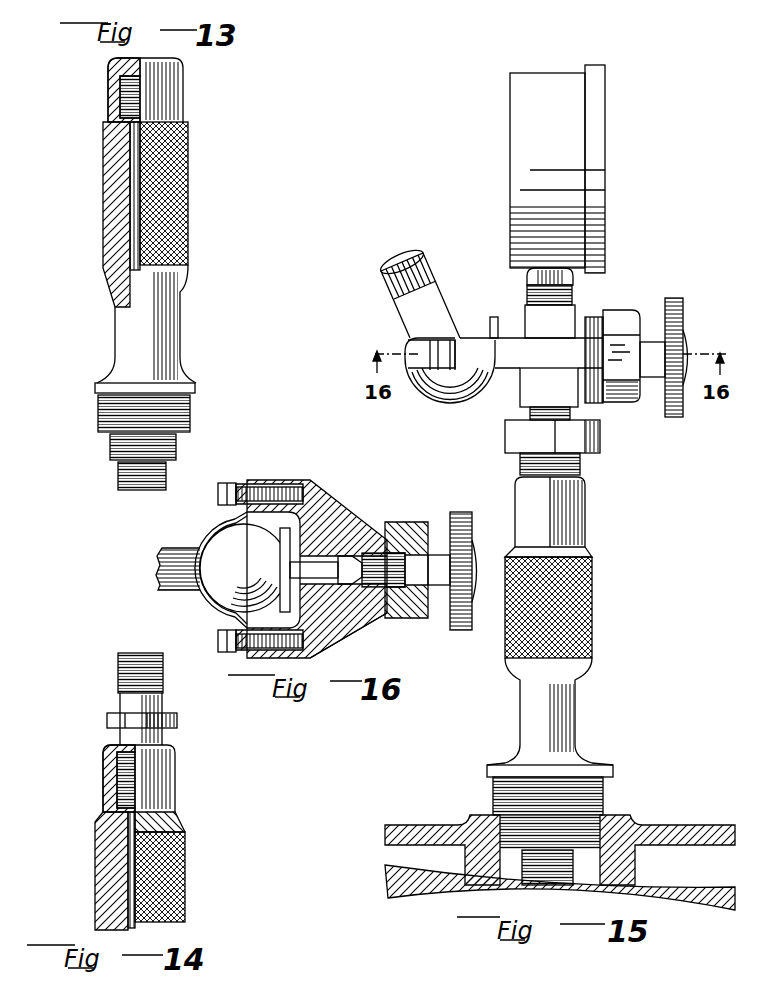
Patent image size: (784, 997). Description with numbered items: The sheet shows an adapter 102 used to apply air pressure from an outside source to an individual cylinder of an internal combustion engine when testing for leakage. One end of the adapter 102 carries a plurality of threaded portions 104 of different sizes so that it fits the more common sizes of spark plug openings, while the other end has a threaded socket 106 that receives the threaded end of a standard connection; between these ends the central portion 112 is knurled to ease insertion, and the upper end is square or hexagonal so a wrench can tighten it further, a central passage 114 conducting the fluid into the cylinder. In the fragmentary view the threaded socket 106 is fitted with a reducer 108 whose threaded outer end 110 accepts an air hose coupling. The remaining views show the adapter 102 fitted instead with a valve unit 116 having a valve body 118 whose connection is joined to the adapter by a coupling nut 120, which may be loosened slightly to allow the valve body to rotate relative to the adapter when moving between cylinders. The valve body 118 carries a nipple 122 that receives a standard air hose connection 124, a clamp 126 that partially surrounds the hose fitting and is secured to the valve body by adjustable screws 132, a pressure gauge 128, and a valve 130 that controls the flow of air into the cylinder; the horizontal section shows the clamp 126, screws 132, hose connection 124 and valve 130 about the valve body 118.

In FIG. 13, the adapter 102 is at (180, 325).
In FIG. 15, the adapter 102 is at (575, 717).
In FIG. 13, the threaded portions 104 is at (118, 470).
In FIG. 15, the threaded portions 104 is at (592, 832).
In FIG. 13, the threaded socket 106 is at (120, 85).
In FIG. 14, the reducer 108 is at (108, 720).
In FIG. 14, the threaded outer end 110 is at (118, 664).
In FIG. 13, the central portion 112 is at (183, 197).
In FIG. 14, the central portion 112 is at (185, 878).
In FIG. 15, the central portion 112 is at (592, 606).
In FIG. 13, the central passage 114 is at (130, 193).
In FIG. 14, the central passage 114 is at (128, 848).
In FIG. 15, the valve unit 116 is at (588, 309).
In FIG. 16, the valve unit 116 is at (329, 490).
In FIG. 15, the valve body 118 is at (535, 398).
In FIG. 15, the coupling nut 120 is at (520, 441).
In FIG. 15, the nipple 122 is at (518, 337).
In FIG. 16, the nipple 122 is at (322, 648).
In FIG. 15, the air hose connection 124 is at (442, 402).
In FIG. 16, the air hose connection 124 is at (168, 556).
In FIG. 15, the clamp 126 is at (408, 342).
In FIG. 16, the clamp 126 is at (207, 530).
In FIG. 15, the pressure gauge 128 is at (597, 110).
In FIG. 15, the valve 130 is at (690, 323).
In FIG. 16, the valve 130 is at (343, 565).
In FIG. 15, the screws 132 is at (432, 368).
In FIG. 16, the screws 132 is at (290, 486).